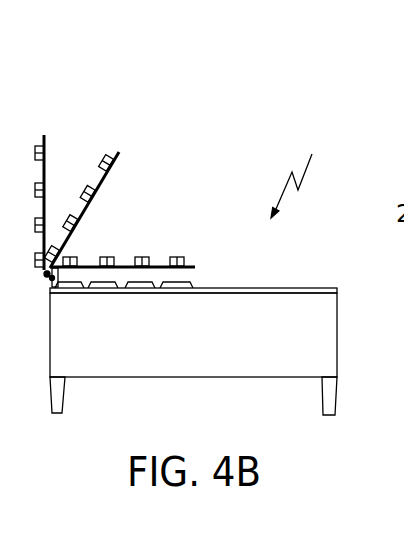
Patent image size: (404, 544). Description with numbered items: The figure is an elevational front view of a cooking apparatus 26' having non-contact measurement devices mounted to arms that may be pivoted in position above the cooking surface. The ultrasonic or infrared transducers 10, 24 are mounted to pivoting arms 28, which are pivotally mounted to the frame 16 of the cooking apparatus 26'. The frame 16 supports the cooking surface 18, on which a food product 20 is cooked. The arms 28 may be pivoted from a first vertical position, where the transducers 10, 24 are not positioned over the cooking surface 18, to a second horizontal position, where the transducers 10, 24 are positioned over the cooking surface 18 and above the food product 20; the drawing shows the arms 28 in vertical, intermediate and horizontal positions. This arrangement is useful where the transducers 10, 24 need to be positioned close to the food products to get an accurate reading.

The frame 16 is at (338, 330).
The cooking surface 18 is at (293, 288).
The food product 20 is at (190, 285).
The ultrasonic or infrared transducer 10 is at (125, 211).
The ultrasonic or infrared transducer 24 is at (112, 170).
The pivoting arm 28 is at (45, 135).
The cooking apparatus 26' is at (303, 171).